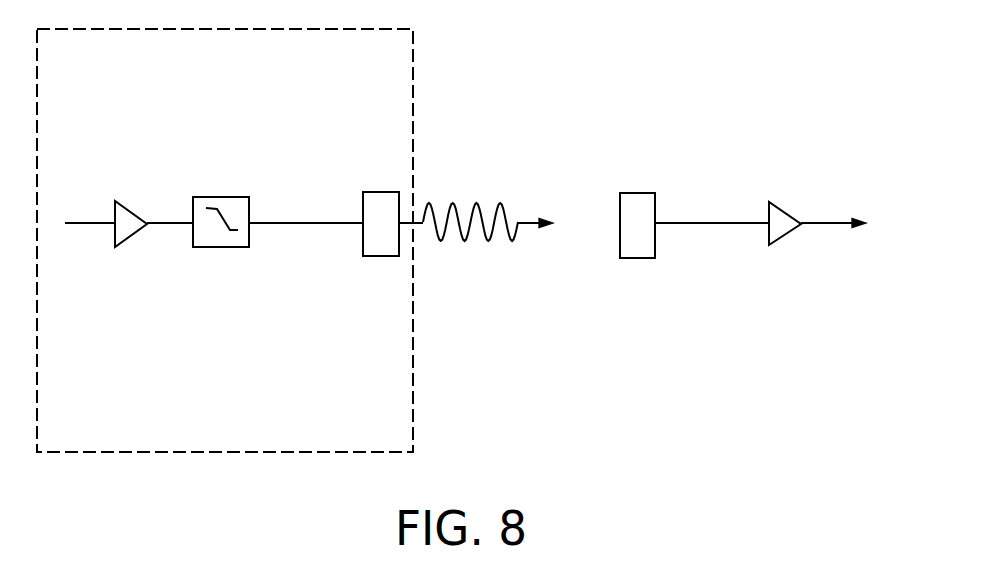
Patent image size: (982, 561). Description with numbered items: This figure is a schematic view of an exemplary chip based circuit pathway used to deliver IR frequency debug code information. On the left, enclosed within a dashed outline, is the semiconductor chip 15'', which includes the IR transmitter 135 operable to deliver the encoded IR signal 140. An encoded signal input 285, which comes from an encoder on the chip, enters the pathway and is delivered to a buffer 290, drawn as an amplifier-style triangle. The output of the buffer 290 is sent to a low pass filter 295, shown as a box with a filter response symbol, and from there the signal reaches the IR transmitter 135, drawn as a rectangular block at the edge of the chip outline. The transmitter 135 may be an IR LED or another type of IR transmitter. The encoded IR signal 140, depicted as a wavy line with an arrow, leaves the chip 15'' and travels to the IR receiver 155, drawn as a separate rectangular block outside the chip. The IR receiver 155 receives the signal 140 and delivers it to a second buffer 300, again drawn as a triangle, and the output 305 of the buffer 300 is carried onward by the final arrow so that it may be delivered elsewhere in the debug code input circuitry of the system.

The semiconductor chip 15'' is at (278, 240).
The encoded signal input 285 is at (80, 221).
The buffer 290 is at (132, 222).
The low pass filter 295 is at (238, 215).
The IR transmitter 135 is at (377, 202).
The encoded IR signal 140 is at (478, 203).
The IR receiver 155 is at (640, 205).
The buffer 300 is at (783, 210).
The output 305 is at (835, 220).